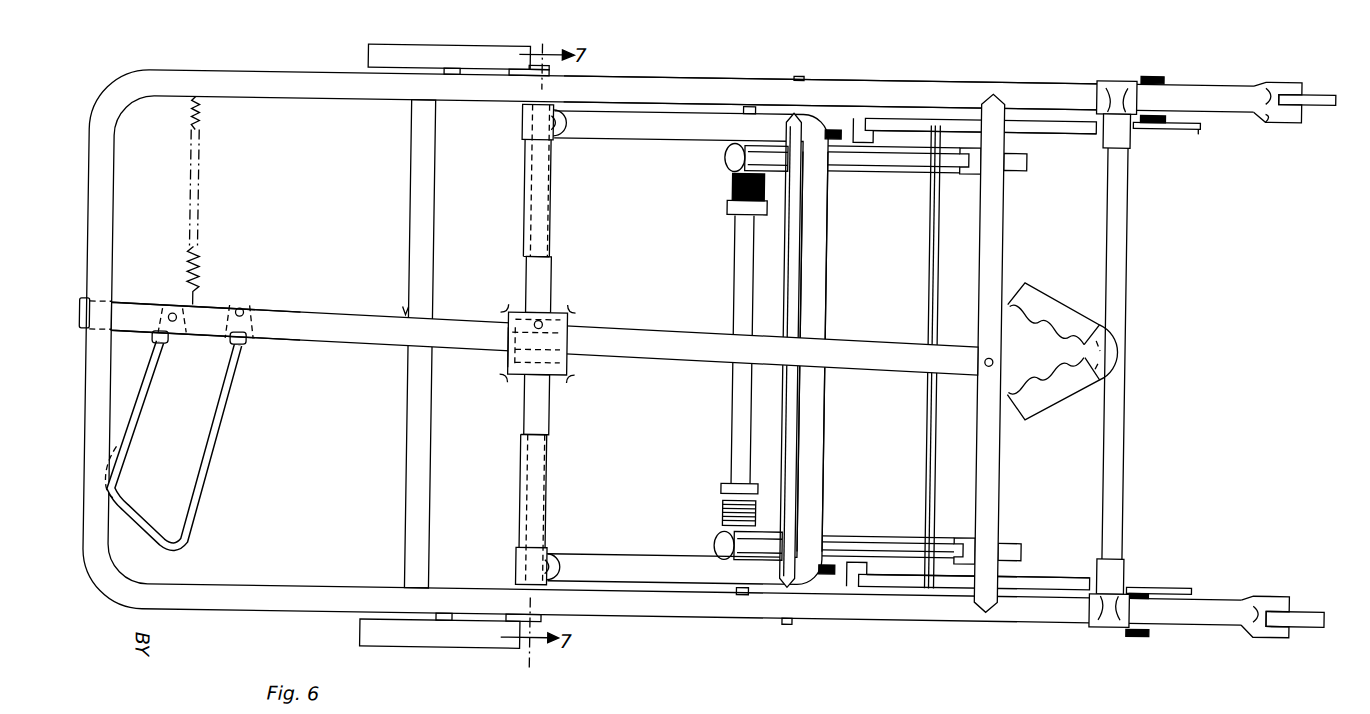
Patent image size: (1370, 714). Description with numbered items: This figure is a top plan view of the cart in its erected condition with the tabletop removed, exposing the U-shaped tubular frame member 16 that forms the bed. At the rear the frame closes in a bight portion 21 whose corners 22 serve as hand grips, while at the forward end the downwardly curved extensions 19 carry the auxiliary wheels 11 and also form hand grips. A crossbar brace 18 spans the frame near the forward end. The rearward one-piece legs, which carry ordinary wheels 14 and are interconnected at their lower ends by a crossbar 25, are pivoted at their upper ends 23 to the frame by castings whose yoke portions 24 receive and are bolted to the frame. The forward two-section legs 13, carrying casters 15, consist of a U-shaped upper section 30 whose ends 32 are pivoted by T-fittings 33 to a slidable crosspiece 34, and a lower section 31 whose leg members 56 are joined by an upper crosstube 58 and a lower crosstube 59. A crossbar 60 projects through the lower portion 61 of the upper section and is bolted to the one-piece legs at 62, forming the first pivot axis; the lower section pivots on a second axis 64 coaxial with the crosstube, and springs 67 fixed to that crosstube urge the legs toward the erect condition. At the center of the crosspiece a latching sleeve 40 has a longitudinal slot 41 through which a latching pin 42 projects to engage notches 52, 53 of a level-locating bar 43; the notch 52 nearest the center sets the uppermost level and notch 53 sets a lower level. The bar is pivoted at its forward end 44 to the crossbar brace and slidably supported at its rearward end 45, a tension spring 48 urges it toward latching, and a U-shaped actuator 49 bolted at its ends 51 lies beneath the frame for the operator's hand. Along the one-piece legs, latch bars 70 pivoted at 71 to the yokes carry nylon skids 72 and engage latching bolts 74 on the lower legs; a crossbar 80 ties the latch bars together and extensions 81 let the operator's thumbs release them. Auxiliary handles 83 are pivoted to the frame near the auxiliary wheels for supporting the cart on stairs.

The auxiliary wheels 11 is at (1326, 86).
The forward two-section legs 13 is at (716, 152).
The wheels 14 is at (364, 58).
The casters 15 is at (1022, 172).
The U-shaped tubular frame member 16 is at (640, 80).
The crossbar brace 18 is at (1002, 247).
The downwardly curved extensions 19 is at (1232, 106).
The bight portion 21 is at (98, 307).
The corners 22 is at (123, 106).
The upper ends of the one-piece legs 23 is at (1137, 64).
The yoke portion 24 is at (1156, 70).
The crossbar 25 is at (416, 439).
The upper section 30 is at (615, 140).
The lower section 31 is at (886, 170).
The ends of the upper section 32 is at (570, 130).
The T-fitting 33 is at (520, 125).
The crosspiece 34 is at (560, 277).
The latching sleeve 40 is at (565, 380).
The longitudinally extending slot 41 is at (507, 361).
The latching pin 42 is at (544, 327).
The level-locating bar 43 is at (620, 334).
The forward end of the level-locating bar 44 is at (976, 356).
The rearward end of the level-locating bar 45 is at (128, 311).
The tension spring 48 is at (199, 262).
The U-shaped actuator 49 is at (207, 479).
The ends of the actuator 51 is at (182, 346).
The notch 52 is at (515, 338).
The notch 53 is at (402, 323).
The leg members 56 is at (861, 170).
The upper crosstube 58 is at (733, 306).
The lower crosstube 59 is at (941, 282).
The crossbar 60 is at (792, 303).
The lower portion of the upper leg section 61 is at (820, 323).
The bolted connection 62 is at (795, 76).
The pivot axis 64 is at (745, 106).
The springs 67 is at (730, 186).
The latch bars 70 is at (1065, 130).
The pivot of latch bar 71 is at (1147, 117).
The nylon skids 72 is at (1032, 116).
The latching bolt 74 is at (832, 128).
The crossbar 80 is at (936, 407).
The extensions 81 is at (1197, 122).
The auxiliary handles 83 is at (1130, 364).